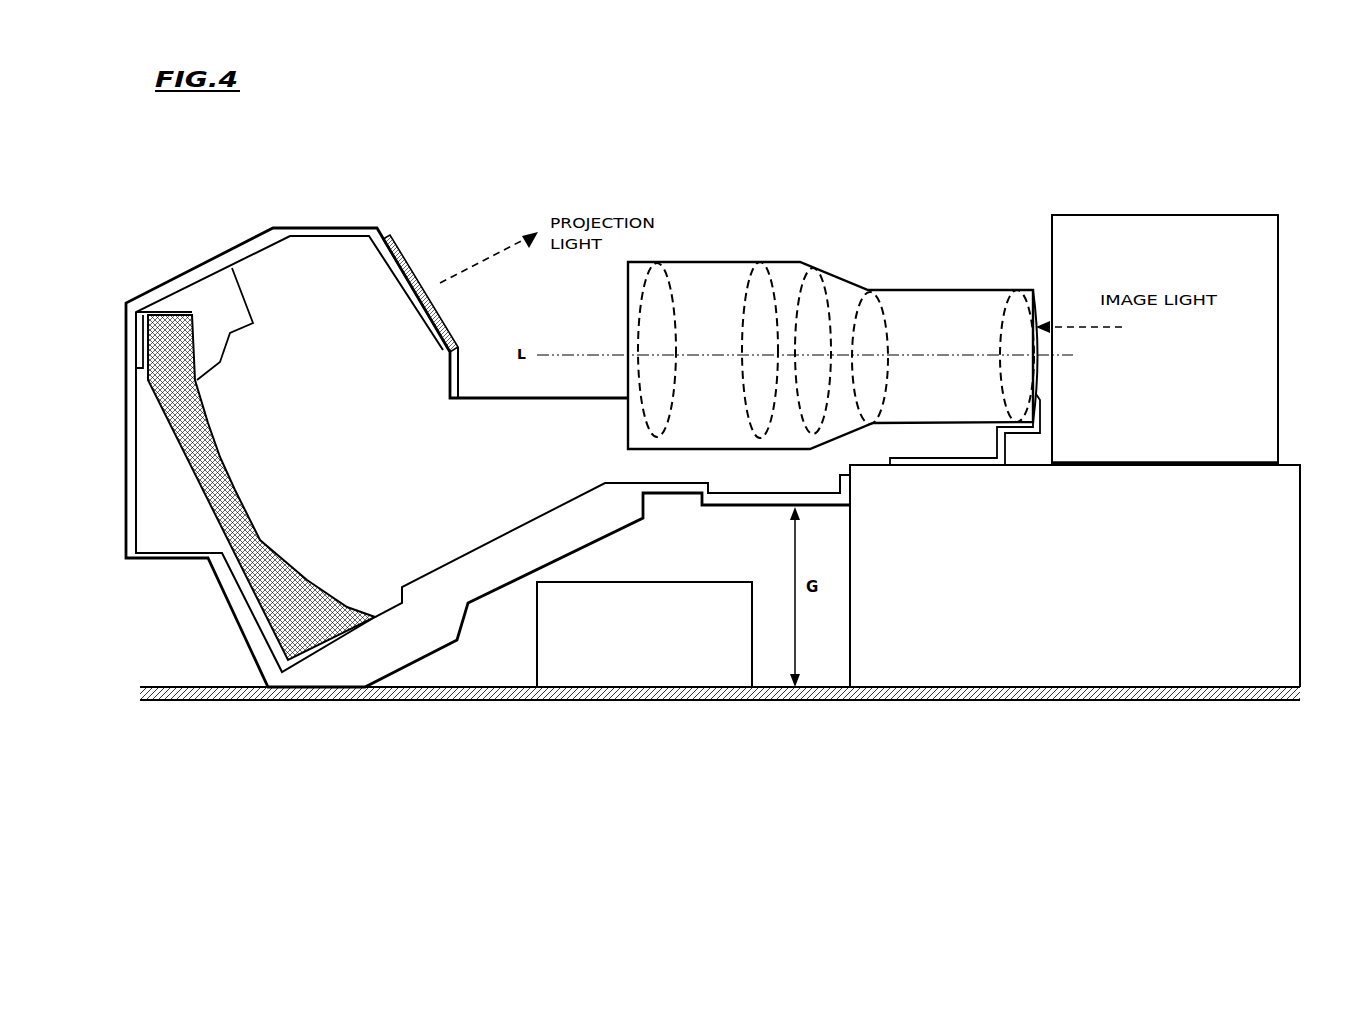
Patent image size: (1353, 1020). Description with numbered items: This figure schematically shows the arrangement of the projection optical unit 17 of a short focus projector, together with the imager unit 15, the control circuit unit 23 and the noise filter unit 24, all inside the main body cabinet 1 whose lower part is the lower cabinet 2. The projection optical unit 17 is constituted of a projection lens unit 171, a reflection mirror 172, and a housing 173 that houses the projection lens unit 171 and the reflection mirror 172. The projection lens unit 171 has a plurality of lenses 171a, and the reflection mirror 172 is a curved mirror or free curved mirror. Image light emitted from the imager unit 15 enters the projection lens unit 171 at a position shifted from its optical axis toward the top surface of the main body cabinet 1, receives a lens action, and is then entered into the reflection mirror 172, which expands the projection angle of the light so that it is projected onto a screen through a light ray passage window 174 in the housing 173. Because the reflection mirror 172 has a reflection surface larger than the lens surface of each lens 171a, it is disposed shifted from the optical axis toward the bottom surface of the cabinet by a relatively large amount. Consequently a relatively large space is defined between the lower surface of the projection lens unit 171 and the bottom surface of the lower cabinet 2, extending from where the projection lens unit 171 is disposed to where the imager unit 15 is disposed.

The main body cabinet 1 is at (278, 708).
The lower cabinet 2 is at (407, 702).
The imager unit 15 is at (1150, 222).
The projection optical unit 17 is at (330, 210).
The control circuit unit 23 is at (850, 642).
The noise filter unit 24 is at (645, 581).
The projection lens unit 171 is at (833, 303).
The lenses 171a is at (778, 286).
The reflection mirror 172 is at (240, 565).
The housing 173 is at (233, 250).
The light ray passage window 174 is at (408, 252).